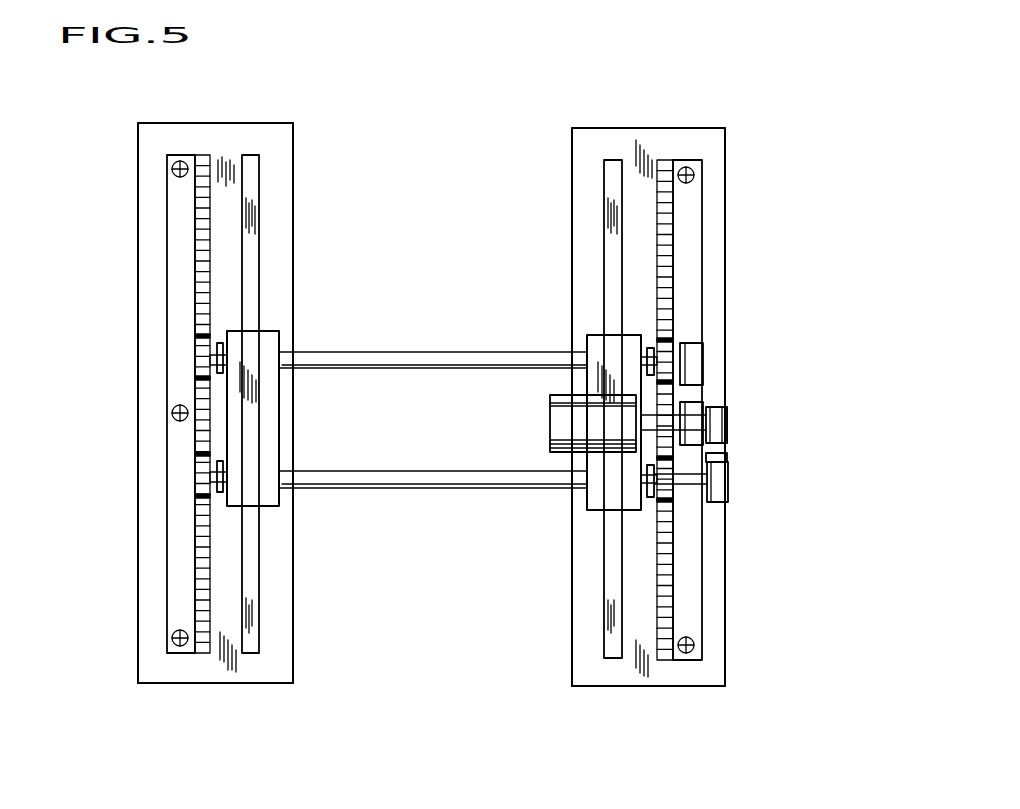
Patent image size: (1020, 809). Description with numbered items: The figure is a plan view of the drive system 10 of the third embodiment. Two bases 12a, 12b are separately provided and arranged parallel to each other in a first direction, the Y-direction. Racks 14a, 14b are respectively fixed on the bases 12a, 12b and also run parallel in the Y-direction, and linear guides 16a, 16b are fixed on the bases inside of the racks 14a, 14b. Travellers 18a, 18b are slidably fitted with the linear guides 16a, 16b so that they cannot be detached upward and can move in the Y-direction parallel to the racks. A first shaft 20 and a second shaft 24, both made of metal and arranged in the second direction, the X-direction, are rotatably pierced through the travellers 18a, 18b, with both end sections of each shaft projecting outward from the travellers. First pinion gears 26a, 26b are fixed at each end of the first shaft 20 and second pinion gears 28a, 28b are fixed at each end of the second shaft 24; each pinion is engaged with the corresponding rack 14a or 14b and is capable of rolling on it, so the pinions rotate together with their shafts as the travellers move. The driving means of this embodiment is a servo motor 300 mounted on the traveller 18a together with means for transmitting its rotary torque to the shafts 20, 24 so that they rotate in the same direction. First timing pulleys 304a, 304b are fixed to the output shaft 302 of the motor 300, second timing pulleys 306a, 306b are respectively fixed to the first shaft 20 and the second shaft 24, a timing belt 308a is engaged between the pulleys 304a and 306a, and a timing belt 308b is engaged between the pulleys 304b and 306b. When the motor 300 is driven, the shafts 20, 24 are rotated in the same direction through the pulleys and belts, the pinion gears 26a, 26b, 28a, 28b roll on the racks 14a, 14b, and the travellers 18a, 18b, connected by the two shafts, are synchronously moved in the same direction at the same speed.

The scanning apparatus 10 is at (416, 125).
The base 12a is at (728, 617).
The base 12b is at (138, 575).
The rack 14a is at (668, 218).
The rack 14b is at (203, 263).
The linear guide 16a is at (612, 660).
The linear guide 16b is at (250, 656).
The traveller 18a is at (598, 340).
The traveller 18b is at (277, 422).
The first shaft 20 is at (392, 352).
The second shaft 24 is at (432, 488).
The first pinion gear 26a is at (653, 345).
The first pinion gear 26b is at (211, 357).
The second pinion gear 28a is at (665, 504).
The second pinion gear 28b is at (205, 476).
The servo motor 300 is at (555, 415).
The output shaft 302 is at (652, 424).
The first timing pulley 304a is at (712, 408).
The first timing pulley 304b is at (728, 412).
The second timing pulley 306a is at (690, 345).
The second timing pulley 306b is at (730, 493).
The timing belt 308a is at (700, 395).
The timing belt 308b is at (728, 454).